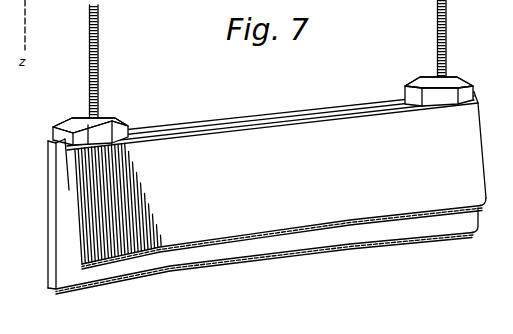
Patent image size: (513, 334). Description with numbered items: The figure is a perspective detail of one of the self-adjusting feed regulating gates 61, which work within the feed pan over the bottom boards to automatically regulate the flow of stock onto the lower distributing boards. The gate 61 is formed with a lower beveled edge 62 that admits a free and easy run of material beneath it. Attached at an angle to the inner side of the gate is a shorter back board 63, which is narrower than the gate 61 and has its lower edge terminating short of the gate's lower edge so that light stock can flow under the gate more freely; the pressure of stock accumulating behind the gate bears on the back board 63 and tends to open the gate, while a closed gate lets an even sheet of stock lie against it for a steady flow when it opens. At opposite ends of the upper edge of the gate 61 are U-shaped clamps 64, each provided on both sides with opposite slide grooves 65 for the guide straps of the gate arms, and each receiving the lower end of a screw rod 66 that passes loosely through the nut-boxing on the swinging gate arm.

The self-adjusting feed regulating gate 61 is at (272, 121).
The lower beveled edge 62 is at (155, 272).
The back board 63 is at (280, 186).
The U-shaped clamp 64 is at (62, 122).
The slide groove 65 is at (103, 128).
The screw rod 66 is at (99, 36).